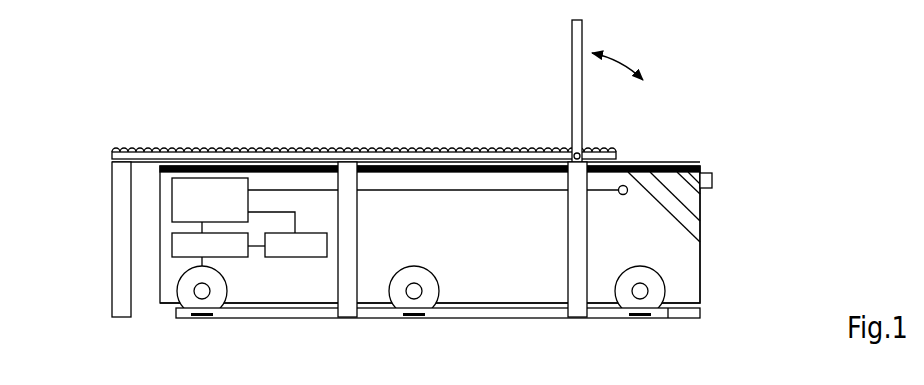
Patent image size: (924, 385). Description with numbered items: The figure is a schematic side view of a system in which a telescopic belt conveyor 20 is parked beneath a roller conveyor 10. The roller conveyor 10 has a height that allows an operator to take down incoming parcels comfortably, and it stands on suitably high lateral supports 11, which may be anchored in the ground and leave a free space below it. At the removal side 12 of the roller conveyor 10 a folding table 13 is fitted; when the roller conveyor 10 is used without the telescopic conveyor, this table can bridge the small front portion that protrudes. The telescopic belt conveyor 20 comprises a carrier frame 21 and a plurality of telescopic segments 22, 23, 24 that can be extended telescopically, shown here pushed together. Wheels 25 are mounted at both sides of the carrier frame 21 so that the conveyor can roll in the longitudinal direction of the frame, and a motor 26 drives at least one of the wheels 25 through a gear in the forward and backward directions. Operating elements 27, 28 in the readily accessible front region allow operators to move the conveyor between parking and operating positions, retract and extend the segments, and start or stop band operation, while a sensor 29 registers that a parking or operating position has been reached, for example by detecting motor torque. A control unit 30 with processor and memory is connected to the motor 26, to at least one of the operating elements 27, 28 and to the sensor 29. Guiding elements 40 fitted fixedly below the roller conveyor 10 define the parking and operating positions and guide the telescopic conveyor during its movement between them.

The roller conveyor 10 is at (246, 120).
The lateral supports 11 is at (118, 268).
The removal side 12 is at (625, 143).
The folding table 13 is at (578, 38).
The telescopic belt conveyor 20 is at (790, 223).
The carrier frame 21 is at (683, 262).
The telescopic segment 22 is at (690, 222).
The telescopic segment 23 is at (692, 200).
The telescopic segment 24 is at (696, 170).
The wheels 25 is at (192, 305).
The motor 26 is at (172, 242).
The operating element 27 is at (620, 195).
The operating element 28 is at (712, 178).
The sensor 29 is at (327, 240).
The control unit 30 is at (172, 188).
The guiding elements 40 is at (685, 318).